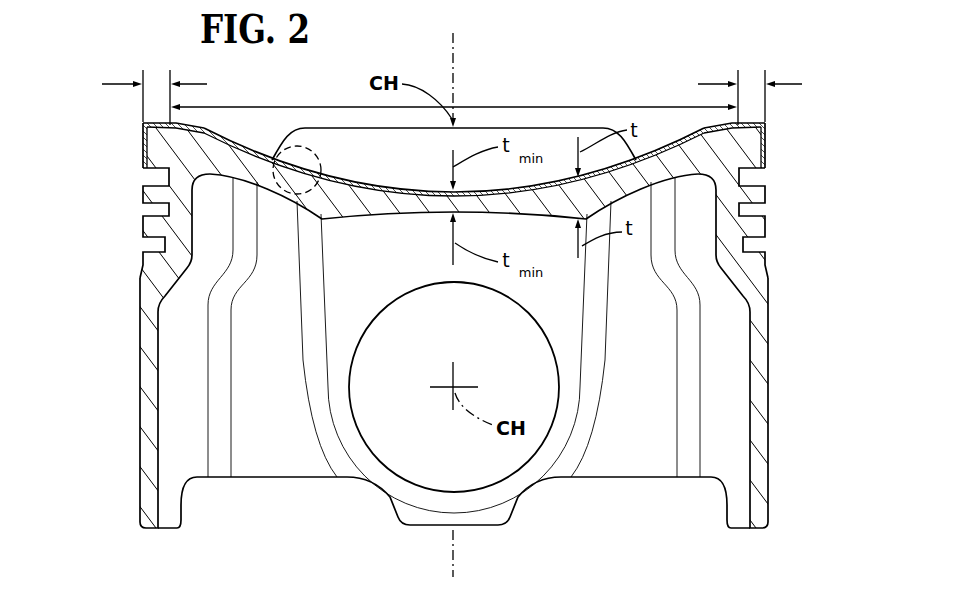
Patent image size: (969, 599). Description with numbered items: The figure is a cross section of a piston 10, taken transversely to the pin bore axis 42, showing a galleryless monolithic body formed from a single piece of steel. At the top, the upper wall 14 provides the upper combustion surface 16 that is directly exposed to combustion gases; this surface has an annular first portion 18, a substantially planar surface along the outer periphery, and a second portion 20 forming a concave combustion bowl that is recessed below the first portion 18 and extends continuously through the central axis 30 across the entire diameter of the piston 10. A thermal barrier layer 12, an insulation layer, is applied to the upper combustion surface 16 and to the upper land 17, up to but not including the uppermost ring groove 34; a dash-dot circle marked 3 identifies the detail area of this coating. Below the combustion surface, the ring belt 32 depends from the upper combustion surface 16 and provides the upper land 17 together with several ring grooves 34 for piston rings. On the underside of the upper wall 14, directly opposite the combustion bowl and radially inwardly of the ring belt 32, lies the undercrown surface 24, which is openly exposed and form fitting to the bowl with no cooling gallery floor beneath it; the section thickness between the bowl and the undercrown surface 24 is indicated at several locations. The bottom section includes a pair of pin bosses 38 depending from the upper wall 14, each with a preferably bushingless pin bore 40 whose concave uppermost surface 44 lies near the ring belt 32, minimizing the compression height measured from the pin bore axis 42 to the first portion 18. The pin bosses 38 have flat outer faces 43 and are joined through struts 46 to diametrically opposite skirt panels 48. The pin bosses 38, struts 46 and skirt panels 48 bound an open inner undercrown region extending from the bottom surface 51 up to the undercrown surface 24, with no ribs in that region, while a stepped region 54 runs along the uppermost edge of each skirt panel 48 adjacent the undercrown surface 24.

The detail region of FIG. 3 is at (321, 160).
The piston 10 is at (668, 66).
The thermal barrier layer 12 is at (767, 144).
The upper wall 14 is at (146, 127).
The upper combustion surface 16 is at (377, 186).
The upper land 17 is at (767, 157).
The annular first portion 18 is at (118, 84).
The second portion 20 is at (547, 106).
The undercrown surface 24 is at (388, 227).
The central axis 30 is at (458, 75).
The ring belt 32 is at (135, 150).
The ring grooves 34 is at (160, 170).
The pin bosses 38 is at (520, 482).
The pin bore 40 is at (368, 429).
The pin bore axis 42 is at (457, 382).
The outer faces 43 is at (387, 480).
The uppermost surface 44 is at (453, 283).
The struts 46 is at (247, 463).
The skirt panels 48 is at (140, 417).
The bottom surface 51 is at (217, 477).
The stepped region 54 is at (173, 287).